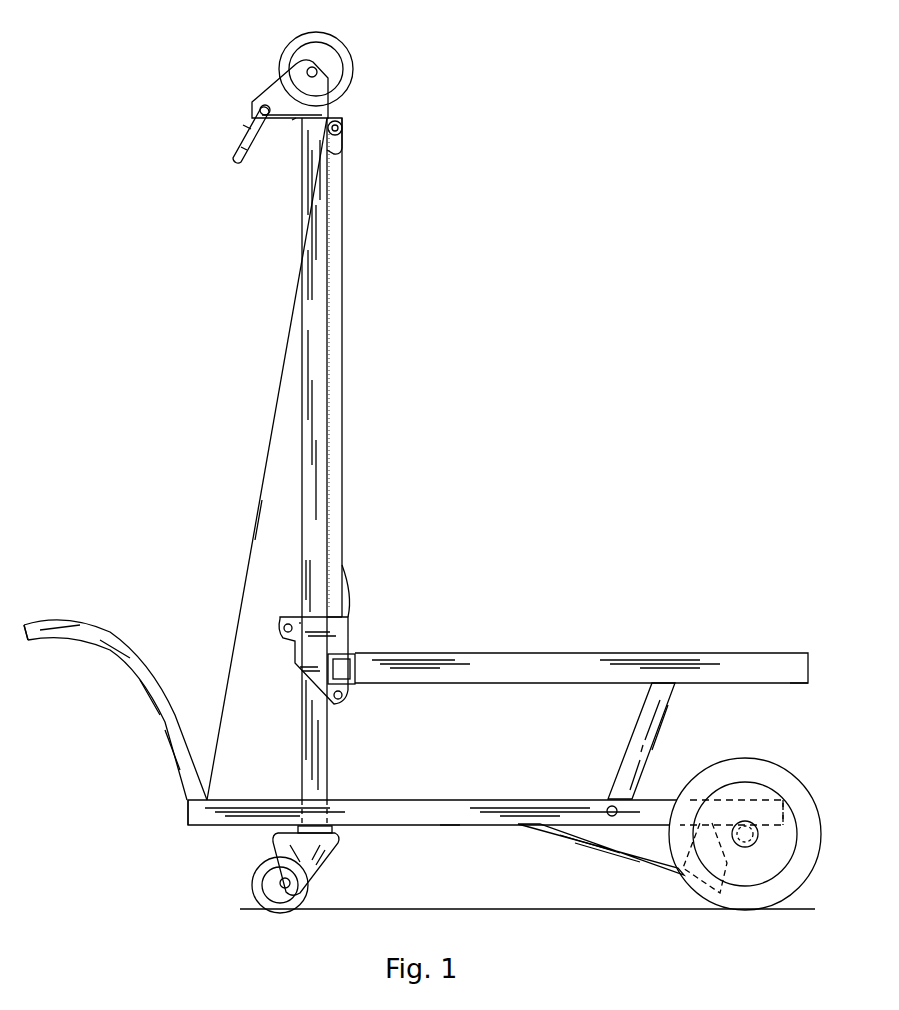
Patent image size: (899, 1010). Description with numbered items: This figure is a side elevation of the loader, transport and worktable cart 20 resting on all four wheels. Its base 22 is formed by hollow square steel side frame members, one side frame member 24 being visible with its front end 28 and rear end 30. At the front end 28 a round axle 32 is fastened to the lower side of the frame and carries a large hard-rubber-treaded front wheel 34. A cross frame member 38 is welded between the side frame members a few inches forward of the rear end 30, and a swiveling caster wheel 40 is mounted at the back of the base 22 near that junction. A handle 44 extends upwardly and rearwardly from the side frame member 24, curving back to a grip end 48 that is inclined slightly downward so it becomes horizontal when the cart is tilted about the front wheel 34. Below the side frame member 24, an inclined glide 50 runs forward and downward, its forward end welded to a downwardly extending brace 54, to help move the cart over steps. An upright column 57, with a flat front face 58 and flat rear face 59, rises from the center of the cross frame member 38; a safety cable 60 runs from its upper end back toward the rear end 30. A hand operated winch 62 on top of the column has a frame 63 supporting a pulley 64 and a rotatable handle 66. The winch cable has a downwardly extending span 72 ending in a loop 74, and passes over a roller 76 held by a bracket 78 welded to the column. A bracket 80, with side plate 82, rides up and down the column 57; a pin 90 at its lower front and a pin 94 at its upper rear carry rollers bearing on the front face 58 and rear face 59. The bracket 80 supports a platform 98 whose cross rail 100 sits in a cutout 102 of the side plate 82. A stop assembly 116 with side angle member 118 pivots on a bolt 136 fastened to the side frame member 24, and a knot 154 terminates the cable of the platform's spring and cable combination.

The loader, transport and worktable cart 20 is at (522, 363).
The base 22 is at (450, 829).
The side frame member 24 is at (400, 806).
The front end 28 is at (783, 812).
The rear end 30 is at (187, 814).
The axle 32 is at (758, 838).
The front wheel 34 is at (764, 760).
The cross frame member 38 is at (343, 799).
The caster wheel 40 is at (256, 874).
The handle 44 is at (145, 662).
The grip end 48 is at (72, 622).
The glide 50 is at (615, 855).
The brace 54 is at (702, 897).
The upright column 57 is at (318, 342).
The flat front face 58 is at (327, 478).
The flat rear face 59 is at (302, 478).
The cable 60 is at (275, 399).
The hand operated winch 62 is at (269, 88).
The frame 63 is at (292, 121).
The pulley 64 is at (341, 46).
The rotatable handle 66 is at (248, 135).
The downwardly extending span 72 is at (343, 394).
The loop 74 is at (349, 603).
The roller 76 is at (343, 130).
The bracket 78 is at (343, 147).
The bracket 80 is at (335, 641).
The side plate 82 is at (312, 626).
The pin 90 is at (340, 700).
The pin 94 is at (287, 633).
The platform 98 is at (530, 652).
The cross rail 100 is at (356, 676).
The cutout 102 is at (345, 668).
The stop assembly 116 is at (648, 738).
The side angle member 118 is at (641, 749).
The bolt 136 is at (607, 808).
The knot 154 is at (712, 685).